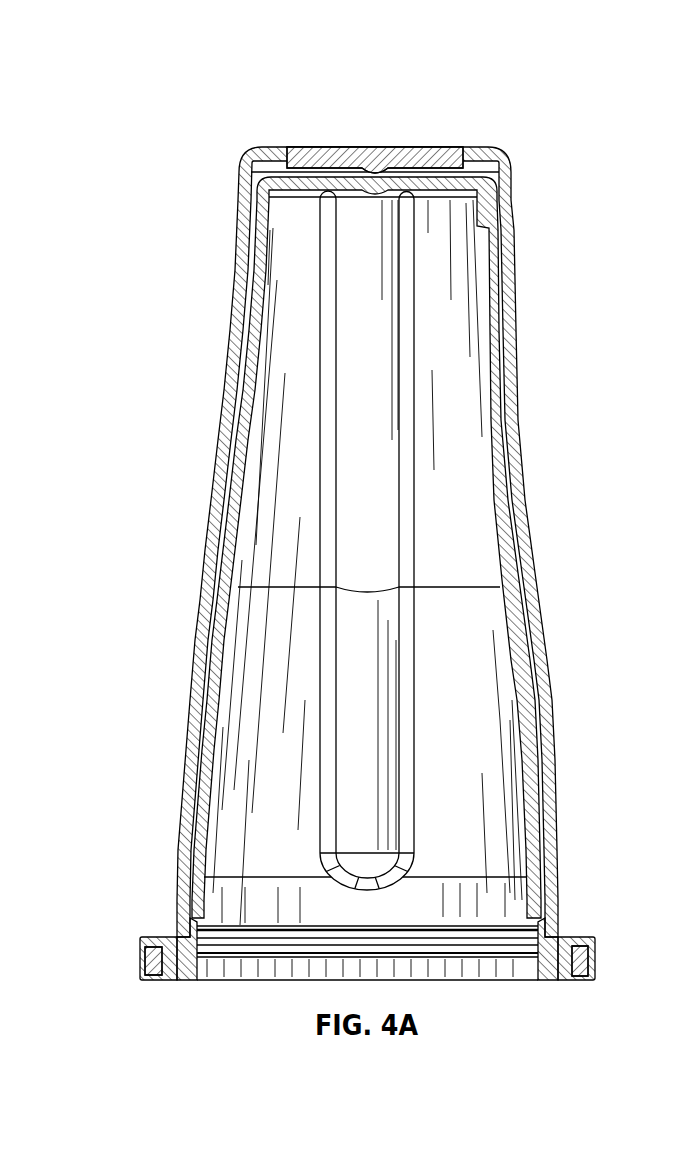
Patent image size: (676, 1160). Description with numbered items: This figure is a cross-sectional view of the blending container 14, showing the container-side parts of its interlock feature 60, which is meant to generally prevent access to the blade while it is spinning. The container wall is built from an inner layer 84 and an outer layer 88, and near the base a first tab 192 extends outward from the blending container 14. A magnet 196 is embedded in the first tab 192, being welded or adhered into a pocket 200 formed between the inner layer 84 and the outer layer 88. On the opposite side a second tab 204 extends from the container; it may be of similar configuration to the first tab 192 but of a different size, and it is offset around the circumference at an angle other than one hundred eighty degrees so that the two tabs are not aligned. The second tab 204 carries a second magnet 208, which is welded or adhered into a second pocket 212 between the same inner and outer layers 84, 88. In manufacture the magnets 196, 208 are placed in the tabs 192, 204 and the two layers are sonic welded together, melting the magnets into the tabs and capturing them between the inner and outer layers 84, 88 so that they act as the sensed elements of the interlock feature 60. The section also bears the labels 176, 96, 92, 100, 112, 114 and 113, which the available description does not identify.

The blending container 14 is at (197, 189).
The top insert 176 is at (372, 149).
The central tube 96 is at (410, 405).
The inner layer 84 is at (212, 742).
The inner surface line 92 is at (197, 787).
The interior space 100 is at (234, 691).
The outer wall surface 112 is at (178, 836).
The outer layer 88 is at (190, 866).
The interlock feature 60 is at (125, 998).
The base ribs 114 is at (505, 937).
The base bottom 113 is at (455, 983).
The first tab 192 is at (171, 953).
The magnet 196 is at (142, 962).
The pocket 200 is at (158, 945).
The second pocket 212 is at (568, 966).
The second tab 204 is at (585, 943).
The second magnet 208 is at (589, 958).